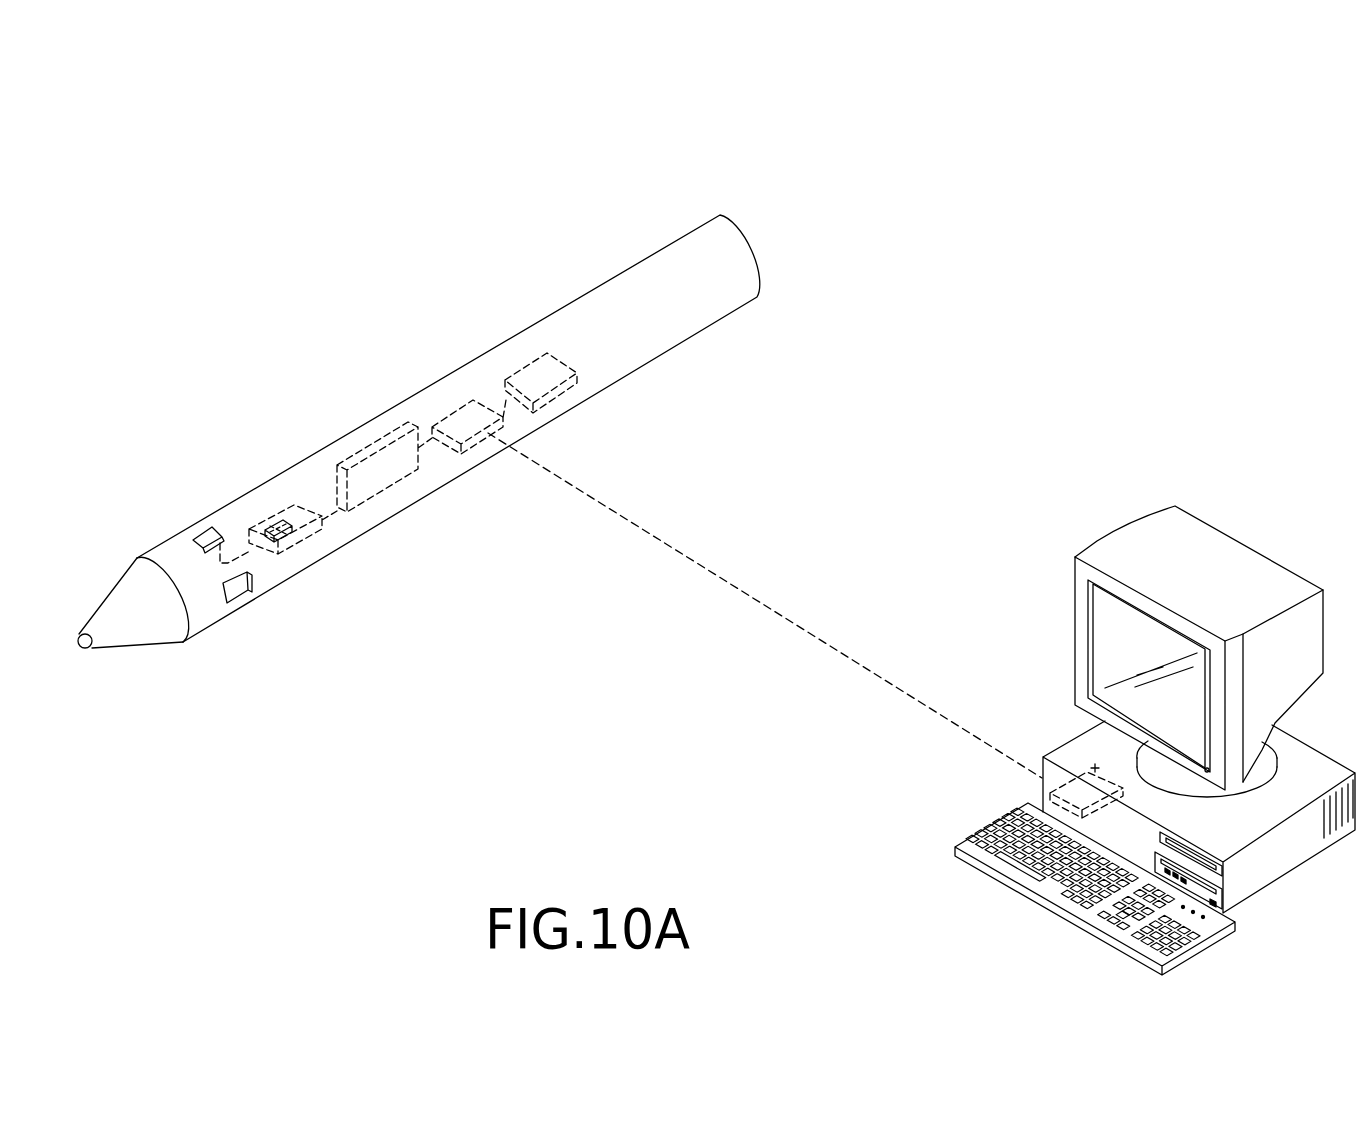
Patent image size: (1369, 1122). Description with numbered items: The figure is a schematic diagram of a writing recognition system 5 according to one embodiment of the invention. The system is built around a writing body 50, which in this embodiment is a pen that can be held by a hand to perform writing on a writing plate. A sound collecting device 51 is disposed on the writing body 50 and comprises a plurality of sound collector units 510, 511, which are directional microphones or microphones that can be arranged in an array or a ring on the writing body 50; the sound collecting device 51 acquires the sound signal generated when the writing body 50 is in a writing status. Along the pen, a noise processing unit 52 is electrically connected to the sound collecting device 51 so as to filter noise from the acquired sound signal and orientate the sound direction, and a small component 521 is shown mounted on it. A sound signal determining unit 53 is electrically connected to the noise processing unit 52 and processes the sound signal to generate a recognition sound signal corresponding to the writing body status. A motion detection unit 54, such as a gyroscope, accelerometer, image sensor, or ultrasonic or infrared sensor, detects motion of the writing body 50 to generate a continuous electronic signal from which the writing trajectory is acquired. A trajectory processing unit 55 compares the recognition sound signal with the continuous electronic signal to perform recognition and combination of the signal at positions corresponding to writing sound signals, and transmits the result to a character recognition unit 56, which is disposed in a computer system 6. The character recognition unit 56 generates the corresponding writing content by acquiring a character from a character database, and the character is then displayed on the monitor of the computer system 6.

The writing recognition system 5 is at (312, 174).
The writing body 50 is at (608, 365).
The sound collecting device 51 is at (85, 512).
The sound collector unit 510 is at (210, 528).
The sound collector unit 511 is at (223, 588).
The noise processing unit 52 is at (310, 550).
The processing chip 521 is at (272, 512).
The sound signal determining unit 53 is at (368, 475).
The motion detection unit 54 is at (547, 383).
The trajectory processing unit 55 is at (463, 413).
The character recognition unit 56 is at (1094, 766).
The computer system 6 is at (1160, 530).